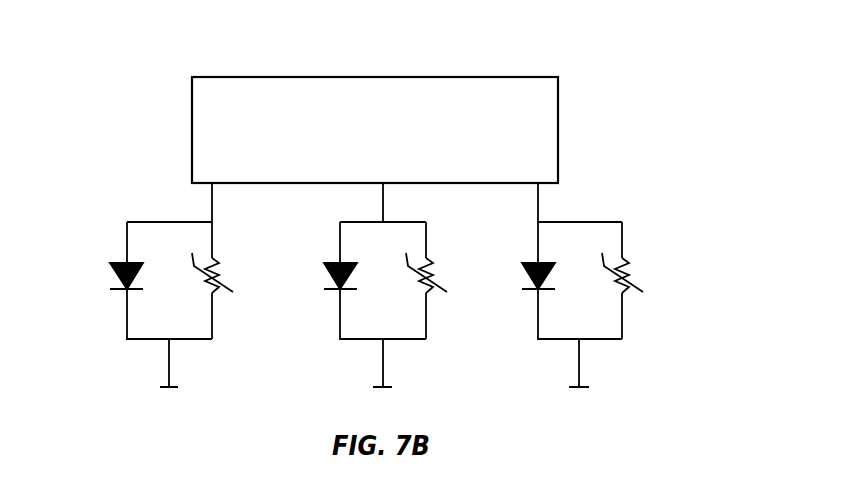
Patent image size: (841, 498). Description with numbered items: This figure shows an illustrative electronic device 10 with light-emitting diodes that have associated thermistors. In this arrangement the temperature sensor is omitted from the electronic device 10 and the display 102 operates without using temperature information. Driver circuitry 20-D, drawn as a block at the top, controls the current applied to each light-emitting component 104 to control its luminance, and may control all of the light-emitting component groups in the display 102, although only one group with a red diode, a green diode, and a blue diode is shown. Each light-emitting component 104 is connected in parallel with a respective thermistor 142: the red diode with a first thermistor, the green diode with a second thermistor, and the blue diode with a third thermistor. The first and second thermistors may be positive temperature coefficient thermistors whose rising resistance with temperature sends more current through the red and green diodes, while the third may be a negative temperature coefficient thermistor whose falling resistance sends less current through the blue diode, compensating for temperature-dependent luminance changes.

The electronic device 10 is at (119, 73).
The driver circuitry 20-D is at (372, 77).
The display 102 is at (687, 57).
The light-emitting component 104 is at (103, 308).
The thermistor 142 is at (230, 304).